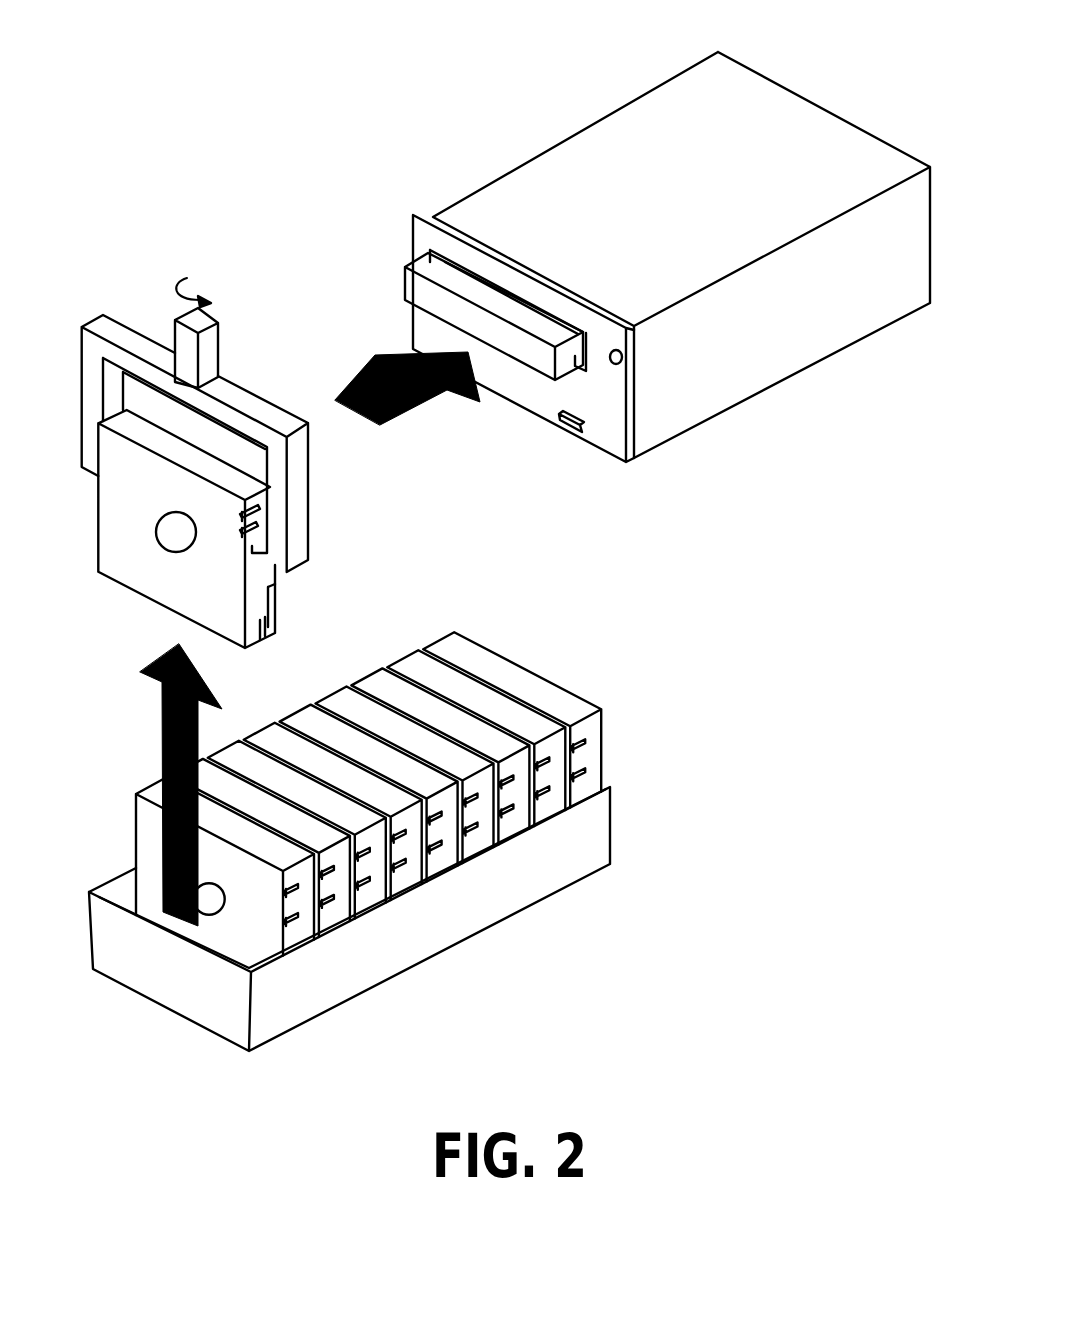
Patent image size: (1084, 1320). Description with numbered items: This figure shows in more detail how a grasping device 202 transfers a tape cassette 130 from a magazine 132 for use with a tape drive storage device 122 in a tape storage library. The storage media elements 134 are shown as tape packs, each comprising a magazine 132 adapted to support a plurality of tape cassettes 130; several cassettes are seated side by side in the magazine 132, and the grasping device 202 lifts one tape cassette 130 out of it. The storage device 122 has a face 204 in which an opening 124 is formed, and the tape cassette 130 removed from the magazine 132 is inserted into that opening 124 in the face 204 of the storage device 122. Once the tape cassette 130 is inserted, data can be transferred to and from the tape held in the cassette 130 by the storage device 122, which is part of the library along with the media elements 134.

The tape drive storage device 122 is at (608, 98).
The opening 124 is at (432, 250).
The tape cassette 130 is at (405, 284).
The magazine 132 is at (465, 943).
The storage media elements 134 is at (573, 666).
The grasping device 202 is at (237, 377).
The face 204 is at (627, 465).